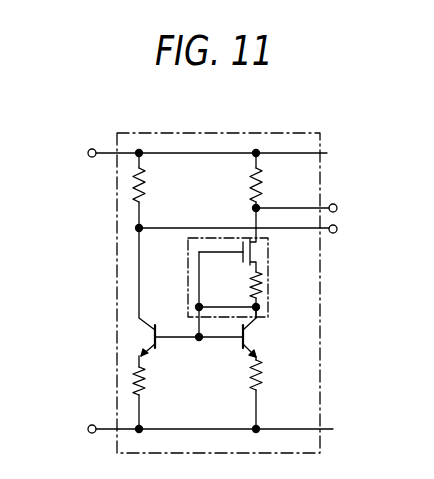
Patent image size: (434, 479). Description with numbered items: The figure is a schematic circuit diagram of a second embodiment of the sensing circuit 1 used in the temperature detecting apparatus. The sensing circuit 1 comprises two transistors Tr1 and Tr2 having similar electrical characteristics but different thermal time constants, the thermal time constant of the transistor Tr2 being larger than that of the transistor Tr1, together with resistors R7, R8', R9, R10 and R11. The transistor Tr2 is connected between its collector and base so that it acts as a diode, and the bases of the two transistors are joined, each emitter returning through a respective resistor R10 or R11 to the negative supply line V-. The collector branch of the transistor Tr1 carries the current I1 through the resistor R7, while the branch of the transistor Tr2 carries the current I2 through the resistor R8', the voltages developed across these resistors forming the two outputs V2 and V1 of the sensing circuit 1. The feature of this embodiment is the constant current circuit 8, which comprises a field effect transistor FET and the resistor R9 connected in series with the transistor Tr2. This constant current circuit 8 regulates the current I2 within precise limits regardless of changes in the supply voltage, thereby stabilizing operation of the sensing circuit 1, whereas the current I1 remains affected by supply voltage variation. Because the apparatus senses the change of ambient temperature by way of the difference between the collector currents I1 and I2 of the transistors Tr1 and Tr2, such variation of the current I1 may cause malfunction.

The sensing circuit 1 is at (260, 132).
The constant current circuit 8 is at (233, 282).
The resistor R7 is at (151, 179).
The resistor R8' is at (232, 190).
The resistor R9 is at (262, 277).
The resistor R10 is at (150, 375).
The resistor R11 is at (262, 386).
The transistor Tr1 is at (148, 322).
The transistor Tr2 is at (250, 330).
The field effect transistor FET is at (257, 247).
The negative supply voltage V- is at (191, 429).
The output voltage V1 is at (337, 233).
The output voltage V2 is at (337, 205).
The current I1 is at (136, 294).
The current I2 is at (245, 200).